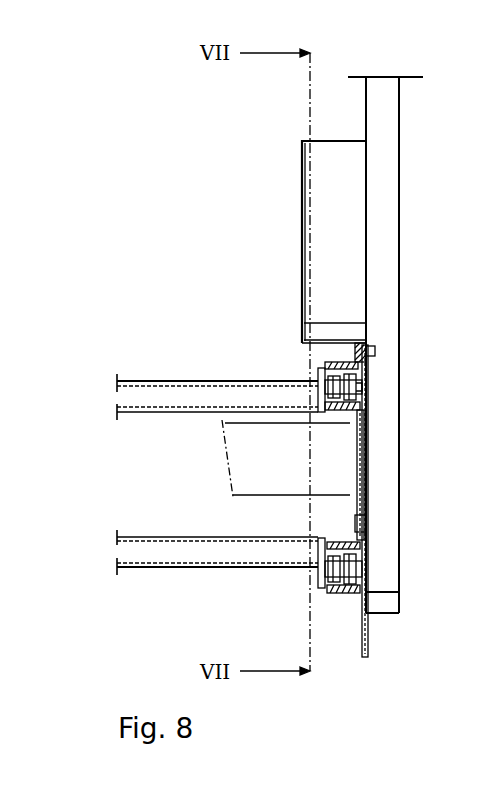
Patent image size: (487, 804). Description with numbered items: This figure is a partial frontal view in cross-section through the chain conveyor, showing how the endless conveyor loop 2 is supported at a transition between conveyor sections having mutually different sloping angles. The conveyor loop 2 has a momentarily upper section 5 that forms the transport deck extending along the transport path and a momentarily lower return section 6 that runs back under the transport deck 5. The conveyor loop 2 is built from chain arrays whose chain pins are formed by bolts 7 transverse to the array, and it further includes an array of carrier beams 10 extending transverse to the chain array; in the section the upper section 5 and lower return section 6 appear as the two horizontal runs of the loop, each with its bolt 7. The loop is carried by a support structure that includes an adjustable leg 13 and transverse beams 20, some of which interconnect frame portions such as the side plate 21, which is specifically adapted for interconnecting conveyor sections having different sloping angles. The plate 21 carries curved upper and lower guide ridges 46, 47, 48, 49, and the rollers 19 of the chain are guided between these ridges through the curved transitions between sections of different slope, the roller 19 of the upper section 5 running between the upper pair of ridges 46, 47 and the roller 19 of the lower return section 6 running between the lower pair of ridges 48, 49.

The conveyor loop 2 is at (165, 426).
The upper section 5 is at (164, 373).
The lower return section 6 is at (163, 583).
The bolt 7 is at (372, 378).
The carrier beam 10 is at (143, 536).
The adjustable leg 13 is at (400, 475).
The roller 19 is at (355, 397).
The transverse beam 20 is at (255, 475).
The frame portion 21 is at (369, 642).
The guide ridge 46 is at (340, 362).
The guide ridge 47 is at (365, 434).
The guide ridge 48 is at (357, 517).
The guide ridge 49 is at (340, 593).